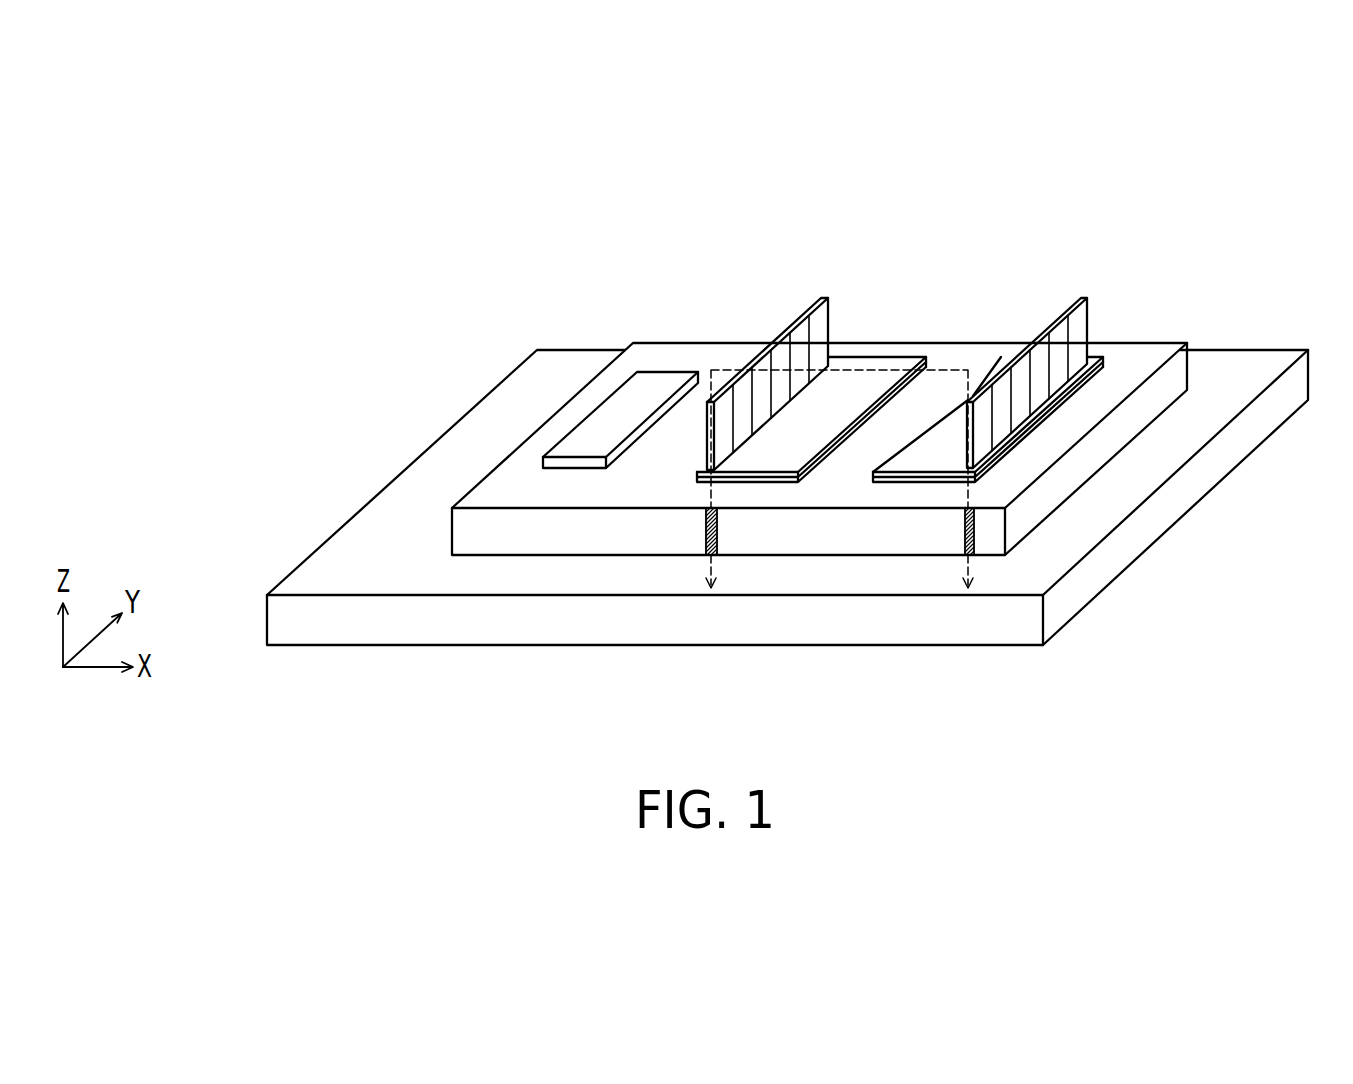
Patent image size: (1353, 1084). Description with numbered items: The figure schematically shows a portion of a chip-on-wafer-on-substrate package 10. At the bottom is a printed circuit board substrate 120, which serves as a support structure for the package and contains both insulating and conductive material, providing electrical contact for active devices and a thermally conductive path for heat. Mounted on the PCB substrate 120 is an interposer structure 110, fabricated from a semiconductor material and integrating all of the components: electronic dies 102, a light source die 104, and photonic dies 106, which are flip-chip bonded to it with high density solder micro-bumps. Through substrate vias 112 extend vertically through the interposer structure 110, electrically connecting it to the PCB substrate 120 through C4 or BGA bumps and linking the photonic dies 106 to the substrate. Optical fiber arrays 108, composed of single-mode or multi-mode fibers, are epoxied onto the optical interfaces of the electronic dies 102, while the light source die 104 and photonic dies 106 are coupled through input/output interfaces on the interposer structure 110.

The CoWoS package 10 is at (1282, 205).
The electronic dies 102 is at (997, 370).
The light source die 104 is at (660, 383).
The photonic dies 106 is at (885, 482).
The optical fiber arrays 108 is at (822, 322).
The interposer structure 110 is at (507, 482).
The through substrate vias 112 is at (706, 527).
The printed circuit board substrate 120 is at (350, 537).